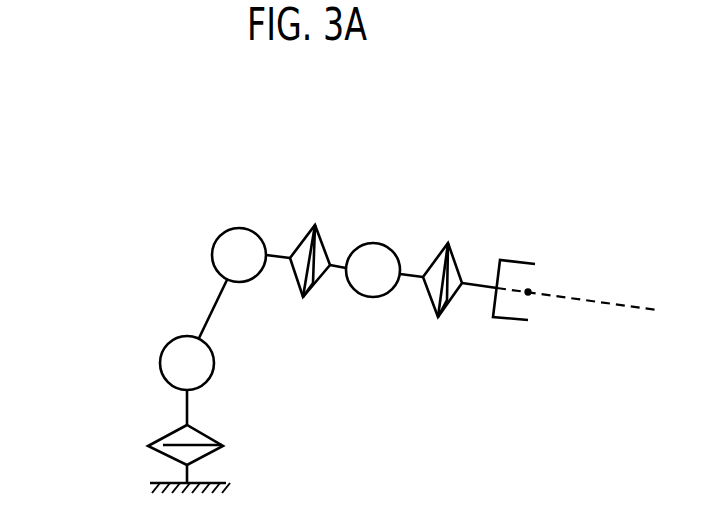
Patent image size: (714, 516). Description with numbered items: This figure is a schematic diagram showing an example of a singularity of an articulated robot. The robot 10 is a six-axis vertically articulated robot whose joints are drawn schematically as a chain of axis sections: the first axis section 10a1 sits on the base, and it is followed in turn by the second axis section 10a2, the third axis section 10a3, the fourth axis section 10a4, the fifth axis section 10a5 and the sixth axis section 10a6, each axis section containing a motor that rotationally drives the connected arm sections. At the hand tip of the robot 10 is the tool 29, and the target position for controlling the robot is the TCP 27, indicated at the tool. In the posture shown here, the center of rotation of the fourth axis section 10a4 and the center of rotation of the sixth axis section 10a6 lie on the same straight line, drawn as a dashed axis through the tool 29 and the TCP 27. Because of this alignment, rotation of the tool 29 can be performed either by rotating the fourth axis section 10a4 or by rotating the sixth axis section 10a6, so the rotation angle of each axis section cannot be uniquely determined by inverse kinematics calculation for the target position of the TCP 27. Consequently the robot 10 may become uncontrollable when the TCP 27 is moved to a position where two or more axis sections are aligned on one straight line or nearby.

The robot 10 is at (207, 182).
The first axis section 10a1 is at (167, 446).
The second axis section 10a2 is at (170, 360).
The third axis section 10a3 is at (227, 252).
The fourth axis section 10a4 is at (312, 288).
The fifth axis section 10a5 is at (377, 285).
The sixth axis section 10a6 is at (445, 297).
The TCP 27 is at (528, 292).
The tool 29 is at (518, 320).